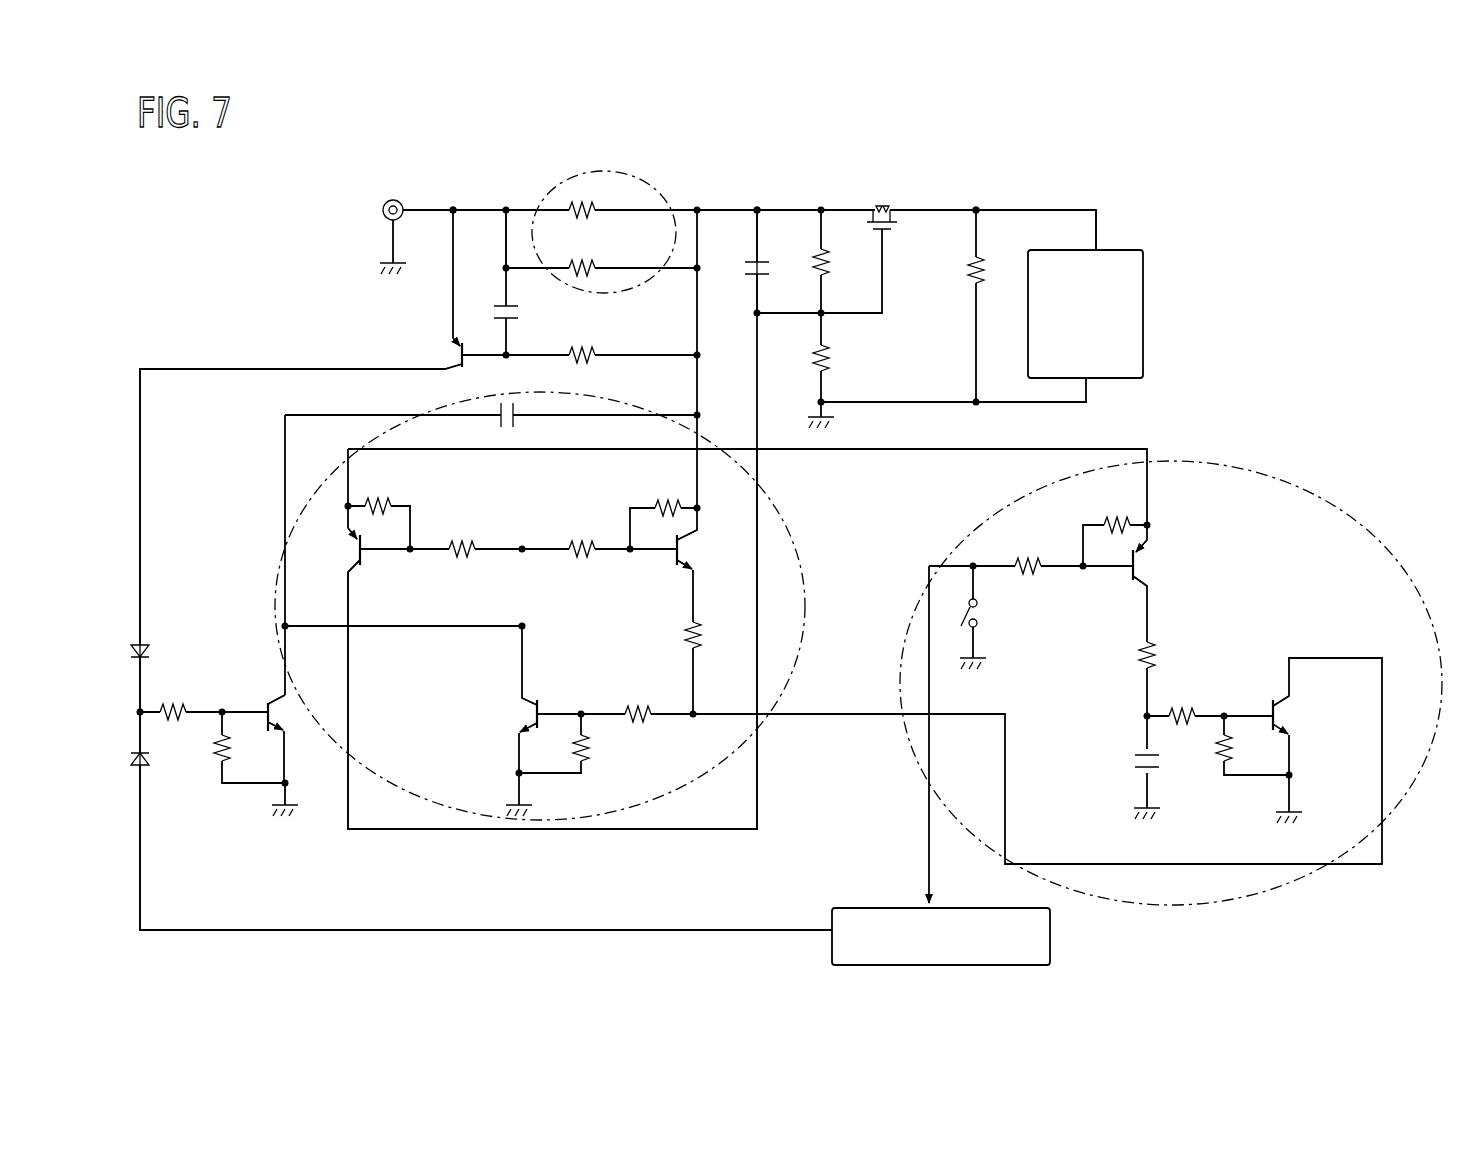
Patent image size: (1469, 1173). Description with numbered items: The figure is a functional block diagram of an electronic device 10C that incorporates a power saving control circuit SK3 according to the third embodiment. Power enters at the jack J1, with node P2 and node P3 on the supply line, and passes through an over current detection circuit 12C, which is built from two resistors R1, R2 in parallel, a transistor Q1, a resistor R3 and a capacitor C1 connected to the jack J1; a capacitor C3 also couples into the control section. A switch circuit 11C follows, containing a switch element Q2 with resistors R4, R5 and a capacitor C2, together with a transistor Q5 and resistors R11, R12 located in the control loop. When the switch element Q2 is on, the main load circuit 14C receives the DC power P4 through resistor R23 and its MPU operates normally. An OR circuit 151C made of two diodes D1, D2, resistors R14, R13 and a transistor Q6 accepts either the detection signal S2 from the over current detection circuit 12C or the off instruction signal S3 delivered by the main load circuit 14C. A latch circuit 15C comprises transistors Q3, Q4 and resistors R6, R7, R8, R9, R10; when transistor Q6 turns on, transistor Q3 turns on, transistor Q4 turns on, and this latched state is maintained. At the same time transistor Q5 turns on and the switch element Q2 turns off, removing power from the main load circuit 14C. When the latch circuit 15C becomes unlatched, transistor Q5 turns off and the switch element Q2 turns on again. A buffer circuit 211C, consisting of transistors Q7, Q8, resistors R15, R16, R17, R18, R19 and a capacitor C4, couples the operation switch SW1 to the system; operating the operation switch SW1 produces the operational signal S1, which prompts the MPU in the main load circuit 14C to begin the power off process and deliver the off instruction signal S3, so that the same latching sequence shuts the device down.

The jack J1 is at (393, 200).
The node P2 is at (430, 210).
The over current detection circuit 12C is at (541, 201).
The electronic device 10C is at (604, 147).
The resistor R1 is at (598, 198).
The resistor R2 is at (598, 257).
The capacitor C1 is at (517, 296).
The resistor R3 is at (586, 337).
The transistor Q1 is at (431, 348).
The capacitor C3 is at (512, 396).
The node P3 is at (730, 210).
The switch circuit 11C is at (814, 187).
The capacitor C2 is at (773, 260).
The resistor R4 is at (841, 260).
The resistor R5 is at (841, 354).
The switch element Q2 is at (873, 203).
The resistor R23 is at (999, 252).
The DC power P4 is at (1070, 210).
The main load circuit 14C is at (1143, 324).
The detection signal S2 is at (140, 415).
The OR circuit 151C is at (209, 606).
The diode D1 is at (159, 641).
The resistor R14 is at (168, 694).
The diode D2 is at (153, 781).
The transistor Q6 is at (262, 700).
The resistor R13 is at (247, 747).
The off instruction signal S3 is at (335, 930).
The latch circuit 15C is at (796, 548).
The power saving control circuit SK3 is at (647, 889).
The resistor R12 is at (384, 489).
The resistor R11 is at (464, 534).
The transistor Q5 is at (371, 563).
The resistor R7 is at (585, 534).
The resistor R6 is at (660, 493).
The transistor Q3 is at (674, 563).
The resistor R10 is at (716, 622).
The resistor R8 is at (642, 698).
The transistor Q4 is at (512, 715).
The resistor R9 is at (601, 750).
The buffer circuit 211C is at (1235, 472).
The resistor R17 is at (1103, 512).
The resistor R18 is at (1021, 546).
The transistor Q8 is at (1161, 554).
The operational signal S1 is at (977, 594).
The operation switch SW1 is at (1002, 624).
The resistor R19 is at (1173, 646).
The resistor R16 is at (1177, 702).
The capacitor C4 is at (1164, 760).
The resistor R15 is at (1249, 752).
The transistor Q7 is at (1305, 715).